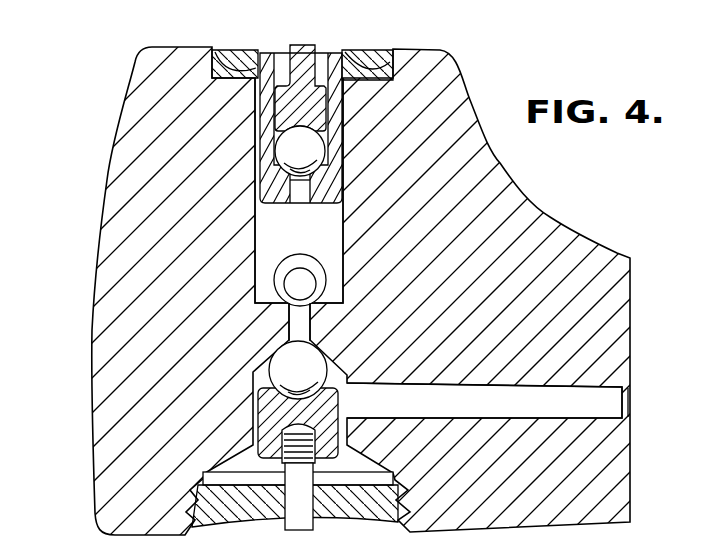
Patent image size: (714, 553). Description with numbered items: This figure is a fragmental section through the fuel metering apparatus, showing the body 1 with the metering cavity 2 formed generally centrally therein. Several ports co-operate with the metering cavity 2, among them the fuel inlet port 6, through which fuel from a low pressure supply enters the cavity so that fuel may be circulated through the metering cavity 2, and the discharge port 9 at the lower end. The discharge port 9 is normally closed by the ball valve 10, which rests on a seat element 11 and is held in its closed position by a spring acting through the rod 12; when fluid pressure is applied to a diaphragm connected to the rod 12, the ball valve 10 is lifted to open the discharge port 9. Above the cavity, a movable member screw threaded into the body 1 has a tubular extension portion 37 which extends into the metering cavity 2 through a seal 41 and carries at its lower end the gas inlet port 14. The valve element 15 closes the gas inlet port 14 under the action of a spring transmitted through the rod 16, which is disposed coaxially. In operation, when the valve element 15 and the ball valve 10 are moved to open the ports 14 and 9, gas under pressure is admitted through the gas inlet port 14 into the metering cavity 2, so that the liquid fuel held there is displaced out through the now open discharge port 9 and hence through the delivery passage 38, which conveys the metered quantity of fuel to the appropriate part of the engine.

The body 1 is at (588, 245).
The metering cavity 2 is at (299, 190).
The fuel inlet port 6 is at (296, 283).
The discharge port 9 is at (300, 320).
The ball valve 10 is at (288, 356).
The seat block 11 is at (272, 402).
The rod 12 is at (301, 517).
The gas inlet port 14 is at (300, 182).
The valve element 15 is at (287, 142).
The rod 16 is at (283, 95).
The tubular extension portion 37 is at (295, 512).
The delivery passage 38 is at (533, 410).
The seal 41 is at (240, 60).